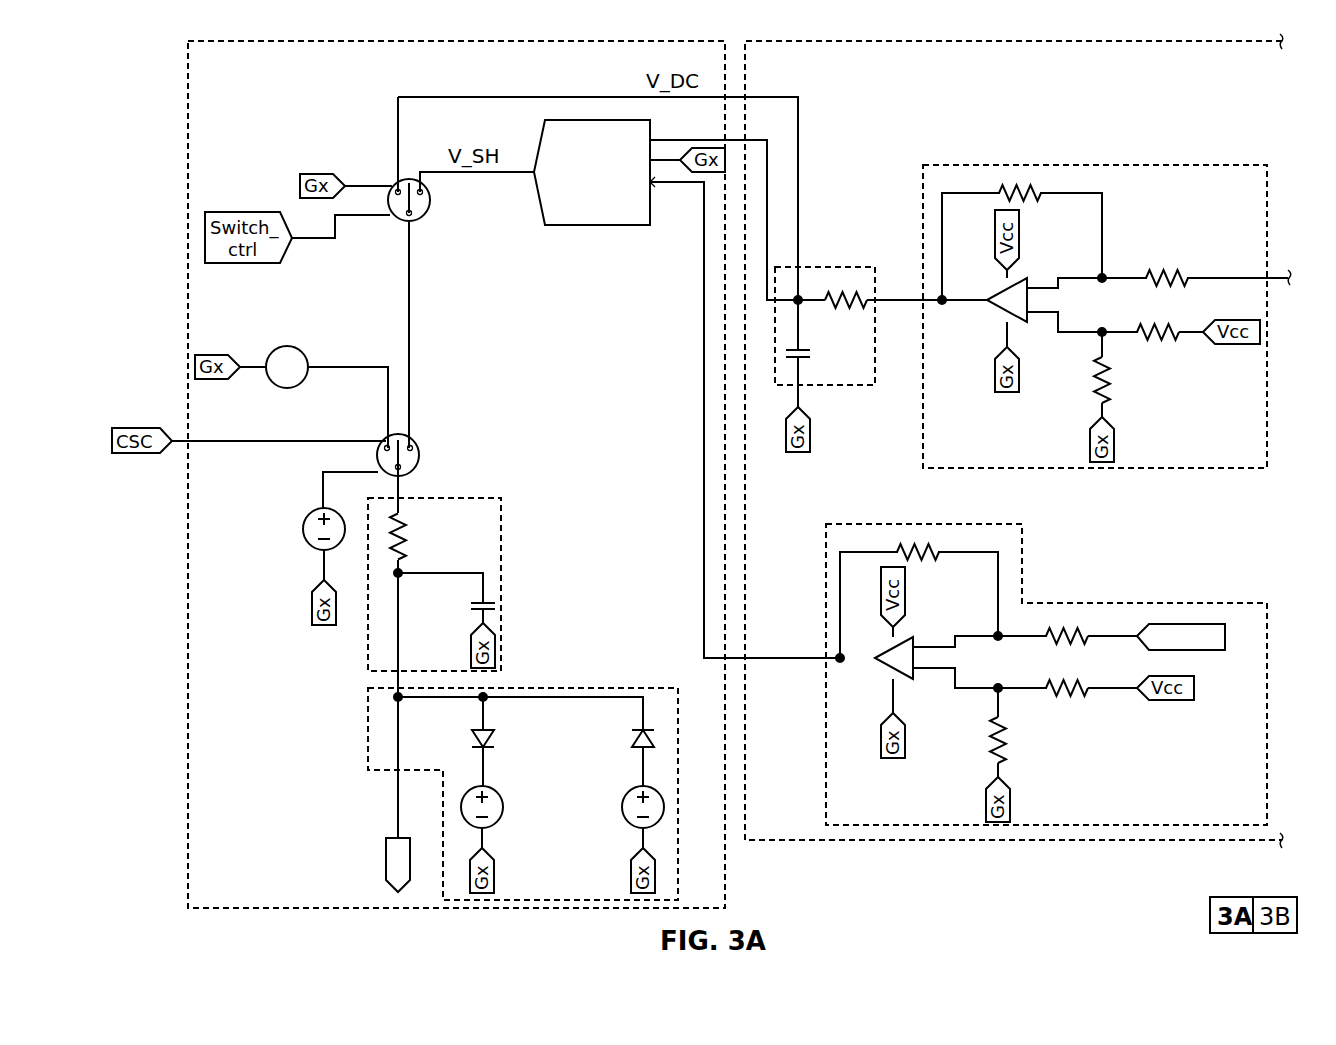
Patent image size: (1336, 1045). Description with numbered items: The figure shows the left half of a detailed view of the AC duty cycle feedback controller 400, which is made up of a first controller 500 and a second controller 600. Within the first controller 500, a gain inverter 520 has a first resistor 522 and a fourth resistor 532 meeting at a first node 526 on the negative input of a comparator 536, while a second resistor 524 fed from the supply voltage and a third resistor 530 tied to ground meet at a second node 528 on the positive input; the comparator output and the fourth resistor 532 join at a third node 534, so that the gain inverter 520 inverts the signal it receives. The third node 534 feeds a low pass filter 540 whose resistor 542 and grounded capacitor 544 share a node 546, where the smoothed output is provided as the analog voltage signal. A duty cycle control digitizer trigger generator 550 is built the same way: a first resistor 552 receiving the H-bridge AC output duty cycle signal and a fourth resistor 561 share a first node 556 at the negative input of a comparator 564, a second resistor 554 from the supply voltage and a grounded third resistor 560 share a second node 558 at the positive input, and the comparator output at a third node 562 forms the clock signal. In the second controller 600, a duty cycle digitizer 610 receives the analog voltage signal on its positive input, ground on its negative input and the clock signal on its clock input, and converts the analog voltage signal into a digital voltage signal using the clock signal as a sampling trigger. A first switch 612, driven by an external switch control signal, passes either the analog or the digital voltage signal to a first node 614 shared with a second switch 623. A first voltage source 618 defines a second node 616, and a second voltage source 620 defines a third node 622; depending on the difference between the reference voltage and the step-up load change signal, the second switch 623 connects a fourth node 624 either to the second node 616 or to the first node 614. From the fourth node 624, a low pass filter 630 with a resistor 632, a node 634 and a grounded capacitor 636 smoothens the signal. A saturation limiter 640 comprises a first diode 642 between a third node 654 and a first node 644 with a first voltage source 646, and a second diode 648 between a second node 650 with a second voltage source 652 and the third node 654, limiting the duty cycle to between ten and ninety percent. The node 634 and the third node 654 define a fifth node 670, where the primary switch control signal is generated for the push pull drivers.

The AC duty cycle feedback controller 400 is at (1038, 858).
The first controller 500 is at (932, 843).
The gain inverter 520 is at (1203, 165).
The first resistor 522 is at (1175, 268).
The second resistor 524 is at (1174, 338).
The first node 526 is at (1104, 212).
The second node 528 is at (1088, 323).
The third resistor 530 is at (1108, 383).
The fourth resistor 532 is at (1027, 187).
The third node 534 is at (970, 303).
The comparator 536 is at (1027, 276).
The low pass filter 540 is at (863, 267).
The resistor 542 is at (829, 292).
The capacitor 544 is at (811, 354).
The node 546 is at (801, 296).
The duty cycle control digitizer trigger generator 550 is at (1182, 594).
The first resistor 552 is at (1074, 627).
The second resistor 554 is at (1083, 694).
The first node 556 is at (996, 632).
The second node 558 is at (994, 691).
The third resistor 560 is at (1007, 742).
The fourth resistor 561 is at (900, 542).
The third node 562 is at (830, 602).
The comparator 564 is at (878, 665).
The second controller 600 is at (187, 860).
The duty cycle digitizer 610 is at (598, 227).
The first switch 612 is at (432, 206).
The first node 614 is at (418, 293).
The second node 616 is at (362, 366).
The first voltage source 618 is at (288, 346).
The second voltage source 620 is at (303, 528).
The third node 622 is at (322, 489).
The second switch 623 is at (421, 455).
The fourth node 624 is at (403, 490).
The low pass filter 630 is at (502, 520).
The resistor 632 is at (410, 545).
The node 634 is at (449, 580).
The capacitor 636 is at (499, 605).
The saturation limiter 640 is at (632, 688).
The first diode 642 is at (494, 742).
The first node 644 is at (488, 775).
The first voltage source 646 is at (503, 820).
The second diode 648 is at (633, 738).
The second node 650 is at (640, 764).
The second voltage source 652 is at (624, 820).
The third node 654 is at (450, 695).
The fifth node 670 is at (394, 795).